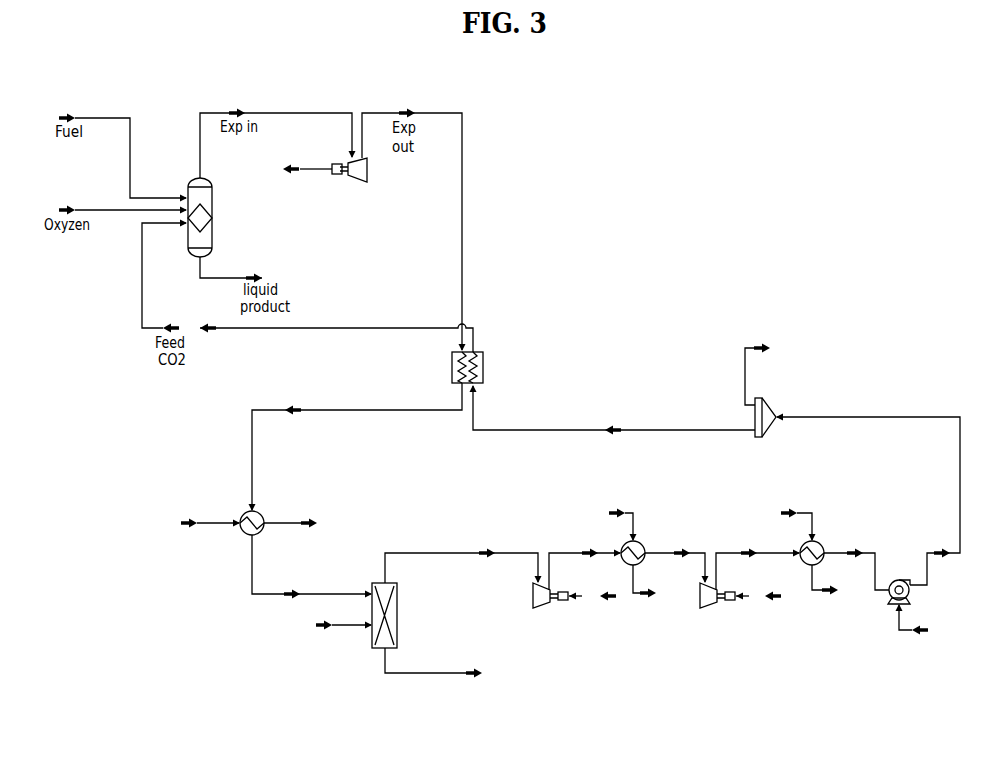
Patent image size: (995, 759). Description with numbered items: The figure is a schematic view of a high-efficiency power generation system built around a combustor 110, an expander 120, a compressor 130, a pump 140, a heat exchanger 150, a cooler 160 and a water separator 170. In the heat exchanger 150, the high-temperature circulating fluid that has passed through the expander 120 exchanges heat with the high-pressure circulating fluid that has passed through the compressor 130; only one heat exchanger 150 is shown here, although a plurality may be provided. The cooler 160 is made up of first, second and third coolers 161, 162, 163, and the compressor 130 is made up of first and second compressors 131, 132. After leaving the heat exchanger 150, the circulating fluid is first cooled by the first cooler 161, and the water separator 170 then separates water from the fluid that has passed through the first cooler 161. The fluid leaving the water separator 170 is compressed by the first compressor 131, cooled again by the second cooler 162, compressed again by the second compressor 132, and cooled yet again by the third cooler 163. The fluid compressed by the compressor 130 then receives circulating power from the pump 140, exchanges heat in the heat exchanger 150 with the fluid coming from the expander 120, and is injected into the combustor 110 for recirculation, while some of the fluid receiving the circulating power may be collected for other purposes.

The combustor 110 is at (212, 233).
The expander 120 is at (367, 170).
The compressor 130 is at (717, 672).
The first compressor 131 is at (540, 609).
The second compressor 132 is at (707, 609).
The pump 140 is at (892, 599).
The heat exchanger 150 is at (483, 368).
The cooler 160 is at (717, 479).
The first cooler 161 is at (265, 513).
The second cooler 162 is at (622, 545).
The third cooler 163 is at (803, 545).
The water separator 170 is at (375, 650).